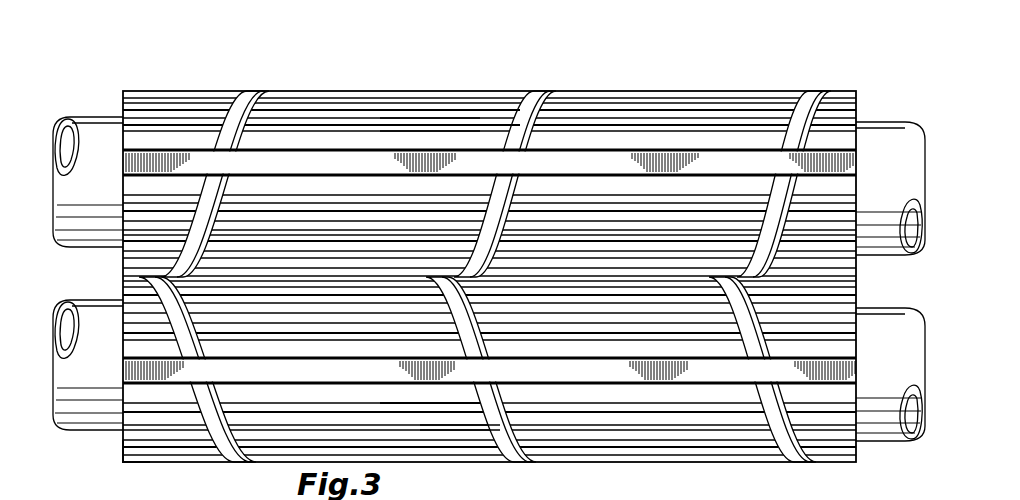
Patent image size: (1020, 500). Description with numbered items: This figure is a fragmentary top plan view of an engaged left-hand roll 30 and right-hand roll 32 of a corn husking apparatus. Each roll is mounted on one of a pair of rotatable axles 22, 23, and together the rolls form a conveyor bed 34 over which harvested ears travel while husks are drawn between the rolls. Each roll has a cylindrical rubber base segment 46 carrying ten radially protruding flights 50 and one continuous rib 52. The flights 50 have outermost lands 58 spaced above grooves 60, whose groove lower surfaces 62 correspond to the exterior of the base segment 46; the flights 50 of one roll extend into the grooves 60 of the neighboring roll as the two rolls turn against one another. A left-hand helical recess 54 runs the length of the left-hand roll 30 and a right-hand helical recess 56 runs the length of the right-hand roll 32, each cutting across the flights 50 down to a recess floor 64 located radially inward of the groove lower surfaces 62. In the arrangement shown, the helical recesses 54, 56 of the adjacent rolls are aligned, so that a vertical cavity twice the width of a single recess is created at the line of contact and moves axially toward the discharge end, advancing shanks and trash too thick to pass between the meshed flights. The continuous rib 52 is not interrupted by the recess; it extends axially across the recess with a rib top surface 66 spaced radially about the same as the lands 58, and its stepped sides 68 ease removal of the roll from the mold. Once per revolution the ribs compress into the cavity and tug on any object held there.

The axle 22 is at (106, 117).
The axle 23 is at (100, 300).
The left-hand roll 30 is at (382, 92).
The right-hand roll 32 is at (448, 455).
The conveyor bed 34 is at (639, 92).
The cylindrical rubber base segment 46 is at (122, 448).
The flight 50 is at (480, 118).
The continuous rib 52 is at (442, 278).
The left-hand helical recess 54 is at (267, 99).
The right-hand helical recess 56 is at (755, 425).
The land 58 is at (584, 125).
The groove 60 is at (430, 128).
The groove lower surface 62 is at (489, 268).
The recess floor 64 is at (802, 122).
The rib top surface 66 is at (490, 268).
The stepped sides 68 is at (200, 420).